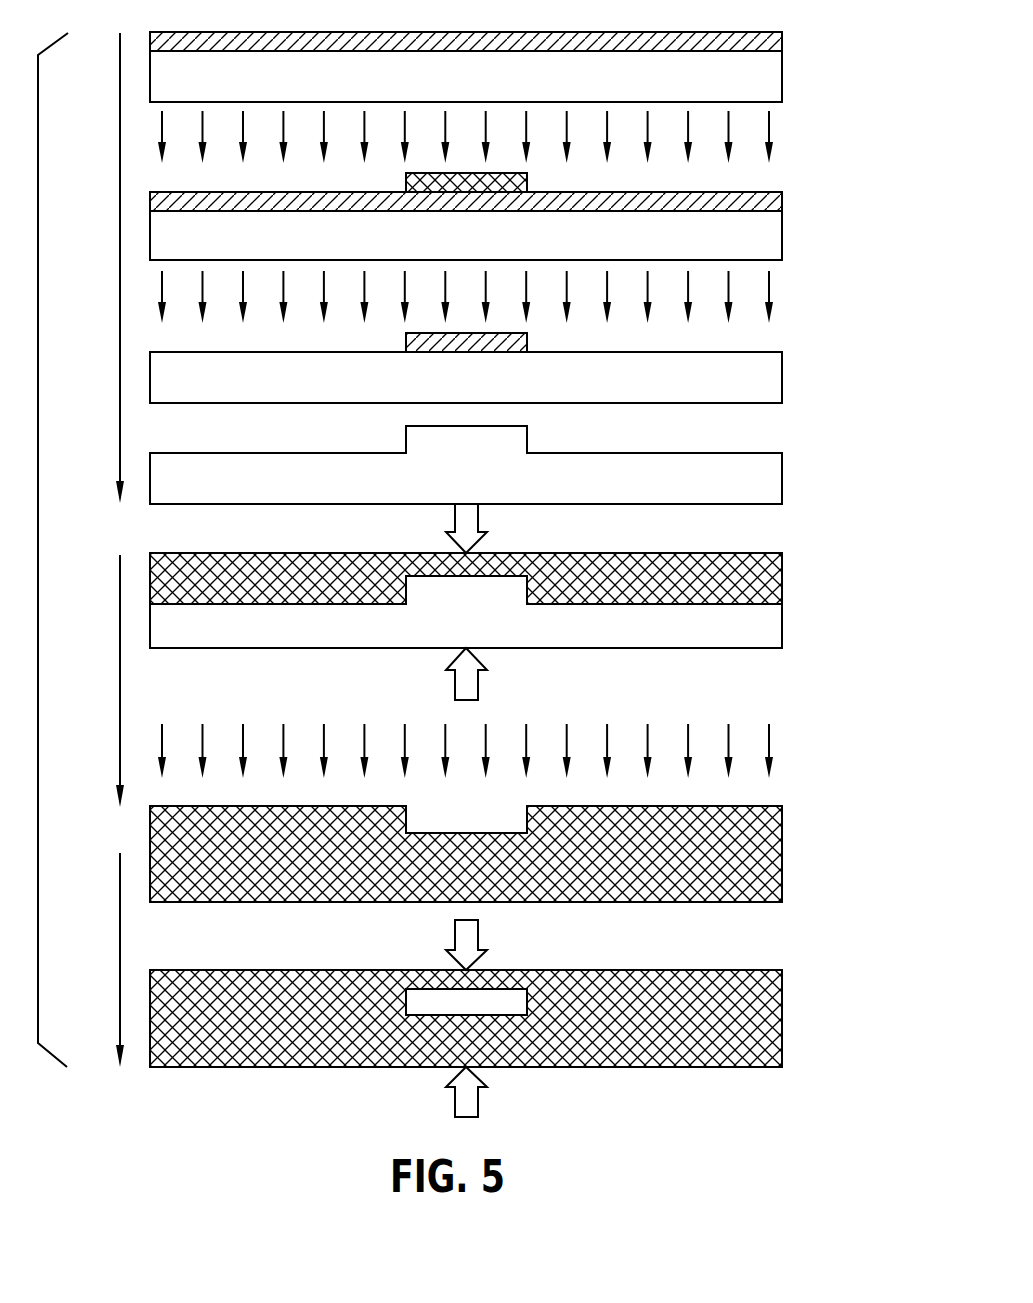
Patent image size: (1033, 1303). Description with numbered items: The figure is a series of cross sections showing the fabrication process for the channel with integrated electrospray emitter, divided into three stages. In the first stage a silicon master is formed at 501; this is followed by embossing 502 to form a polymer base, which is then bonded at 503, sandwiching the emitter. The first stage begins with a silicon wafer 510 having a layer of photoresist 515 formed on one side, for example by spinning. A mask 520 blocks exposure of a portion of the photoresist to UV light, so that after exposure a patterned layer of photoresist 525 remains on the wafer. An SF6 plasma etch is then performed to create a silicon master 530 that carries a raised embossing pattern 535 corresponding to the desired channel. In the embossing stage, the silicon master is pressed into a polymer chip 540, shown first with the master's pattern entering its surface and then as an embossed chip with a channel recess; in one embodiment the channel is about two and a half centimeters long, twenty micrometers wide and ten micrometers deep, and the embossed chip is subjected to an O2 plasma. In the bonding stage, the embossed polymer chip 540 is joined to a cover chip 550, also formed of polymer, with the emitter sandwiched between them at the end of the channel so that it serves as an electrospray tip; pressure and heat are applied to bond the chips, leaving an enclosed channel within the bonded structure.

The silicon master formation stage 501 is at (119, 267).
The embossing stage 502 is at (119, 680).
The bonding stage 503 is at (119, 958).
The silicon wafer 510 is at (784, 72).
The photoresist 515 is at (642, 30).
The mask 520 is at (529, 181).
The patterned layer of photoresist 525 is at (529, 340).
The silicon master 530 is at (784, 477).
The embossing pattern 535 is at (529, 438).
The polymer chip 540 is at (784, 581).
The cover chip 550 is at (784, 1020).